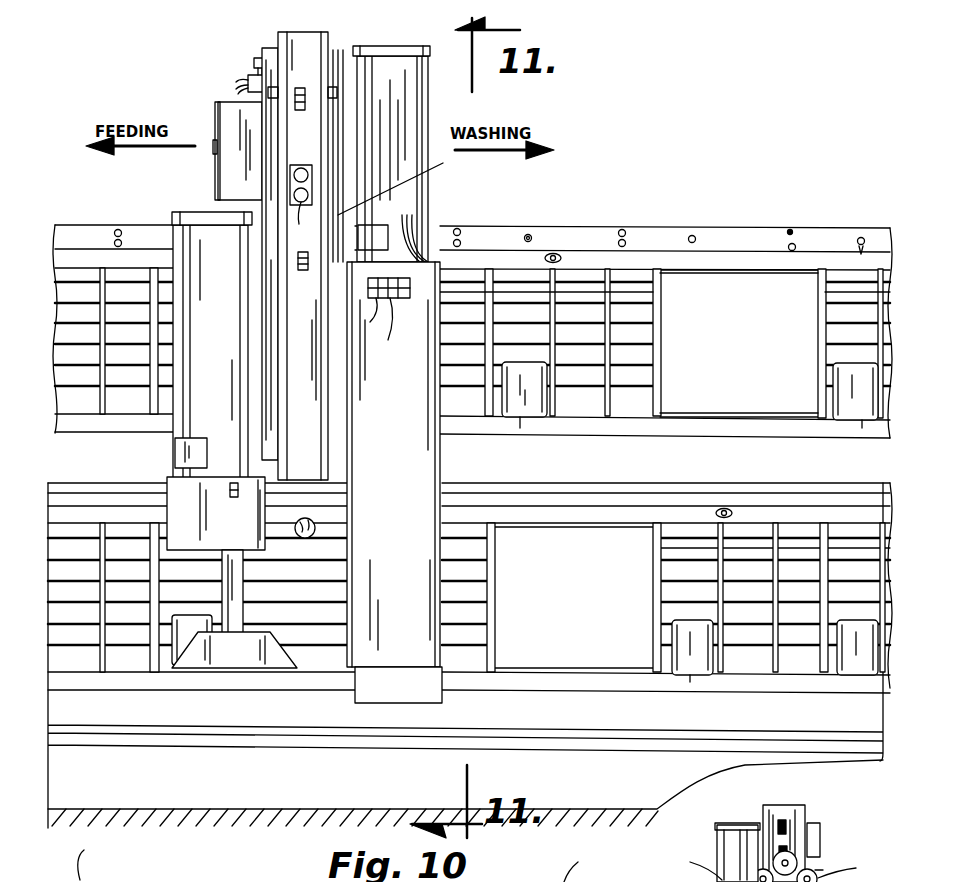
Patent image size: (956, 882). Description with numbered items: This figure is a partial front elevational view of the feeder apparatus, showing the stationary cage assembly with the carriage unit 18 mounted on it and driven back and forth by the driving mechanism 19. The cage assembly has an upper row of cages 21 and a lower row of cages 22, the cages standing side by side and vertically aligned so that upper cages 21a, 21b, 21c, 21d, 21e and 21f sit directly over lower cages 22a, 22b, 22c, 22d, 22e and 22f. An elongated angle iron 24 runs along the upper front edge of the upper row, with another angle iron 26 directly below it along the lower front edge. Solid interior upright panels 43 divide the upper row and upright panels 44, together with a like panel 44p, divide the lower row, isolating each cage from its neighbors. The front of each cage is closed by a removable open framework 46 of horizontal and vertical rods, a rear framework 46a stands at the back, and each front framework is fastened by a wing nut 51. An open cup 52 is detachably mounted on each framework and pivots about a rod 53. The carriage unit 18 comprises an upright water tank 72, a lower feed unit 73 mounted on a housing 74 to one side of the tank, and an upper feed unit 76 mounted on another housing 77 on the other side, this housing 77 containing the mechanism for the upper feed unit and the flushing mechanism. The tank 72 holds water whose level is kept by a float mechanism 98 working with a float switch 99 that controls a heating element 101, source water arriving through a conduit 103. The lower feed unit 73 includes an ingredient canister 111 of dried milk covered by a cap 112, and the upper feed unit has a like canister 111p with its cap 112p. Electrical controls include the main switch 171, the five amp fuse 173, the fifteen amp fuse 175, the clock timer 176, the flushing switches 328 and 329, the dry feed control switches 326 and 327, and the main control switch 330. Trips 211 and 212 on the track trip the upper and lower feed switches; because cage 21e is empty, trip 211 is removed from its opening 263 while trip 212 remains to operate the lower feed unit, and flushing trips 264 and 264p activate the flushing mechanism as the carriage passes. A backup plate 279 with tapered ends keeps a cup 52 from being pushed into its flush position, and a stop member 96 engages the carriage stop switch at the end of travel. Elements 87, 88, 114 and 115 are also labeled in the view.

The carriage unit 18 is at (822, 814).
The driving mechanism 19 is at (822, 870).
The upper row of cages 21 is at (227, 881).
The upper cage 21a is at (90, 268).
The upper cage 21b is at (167, 268).
The upper cage 21c is at (468, 280).
The upper cage 21d is at (589, 274).
The upper cage 21e is at (736, 282).
The upper cage 21f is at (850, 276).
The lower row of cages 22 is at (470, 655).
The lower cage 22a is at (68, 662).
The lower cage 22b is at (310, 668).
The lower cage 22c is at (464, 672).
The lower cage 22d is at (560, 660).
The lower cage 22e is at (752, 668).
The lower cage 22f is at (880, 670).
The elongated angle iron 24 is at (680, 272).
The angle iron 26 is at (722, 418).
The interior upright panel 43 is at (658, 404).
The upright panel 44 is at (152, 530).
The lower post 44p is at (652, 600).
The open framework 46 is at (756, 542).
The rear open framework 46a is at (586, 865).
The wing nut 51 is at (500, 881).
The cup 52 is at (704, 678).
The rod 53 is at (666, 676).
The water tank 72 is at (774, 812).
The lower feed unit 73 is at (282, 362).
The housing 74 is at (211, 538).
The upper feed unit 76 is at (712, 836).
The housing 77 is at (420, 413).
The roller 87 is at (851, 866).
The roller 88 is at (694, 864).
The stop member 96 is at (97, 860).
The float mechanism 98 is at (258, 58).
The float switch 99 is at (248, 78).
The heating element 101 is at (315, 522).
The conduit 103 is at (422, 214).
The ingredient canister 111 is at (220, 348).
The upper feed canister 111p is at (392, 146).
The cap 112 is at (212, 214).
The cylinder cap 112p is at (395, 48).
The coupling 114 is at (178, 450).
The cylinder body 115 is at (410, 96).
The main switch 171 is at (310, 76).
The five amp fuse 173 is at (302, 166).
The fifteen amp fuse 175 is at (300, 225).
The clock timer 176 is at (212, 126).
The trip 211 is at (622, 230).
The trip 212 is at (794, 246).
The opening 263 is at (792, 232).
The flushing trip 264 is at (530, 236).
The flushing trip 264p is at (694, 236).
The backup plate 279 is at (195, 669).
The control switch 326 is at (404, 298).
The control switch 327 is at (238, 492).
The switch 328 is at (395, 327).
The switch 329 is at (370, 318).
The main control switch 330 is at (303, 270).